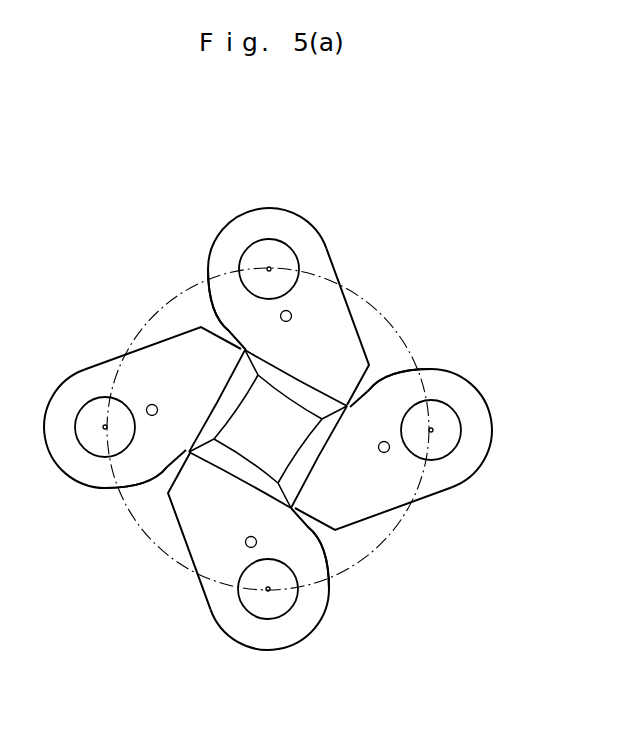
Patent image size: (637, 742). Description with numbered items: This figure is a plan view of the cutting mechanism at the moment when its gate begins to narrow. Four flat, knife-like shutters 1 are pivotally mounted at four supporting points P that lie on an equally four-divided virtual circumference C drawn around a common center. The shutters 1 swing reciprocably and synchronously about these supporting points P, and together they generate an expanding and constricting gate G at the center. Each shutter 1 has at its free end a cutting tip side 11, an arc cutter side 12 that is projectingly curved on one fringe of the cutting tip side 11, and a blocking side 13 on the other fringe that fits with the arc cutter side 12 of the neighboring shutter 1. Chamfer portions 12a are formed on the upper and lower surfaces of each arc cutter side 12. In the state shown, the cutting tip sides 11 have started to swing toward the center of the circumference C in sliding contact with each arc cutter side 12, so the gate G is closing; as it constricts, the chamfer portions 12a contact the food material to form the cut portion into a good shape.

The shutter 1 is at (298, 213).
The supporting point P is at (269, 269).
The virtual circumference C is at (413, 350).
The expanding and constricting gate G is at (280, 417).
The cutting tip side 11 is at (259, 360).
The arc cutter side 12 is at (234, 420).
The chamfer portion 12a is at (243, 385).
The blocking side 13 is at (212, 322).